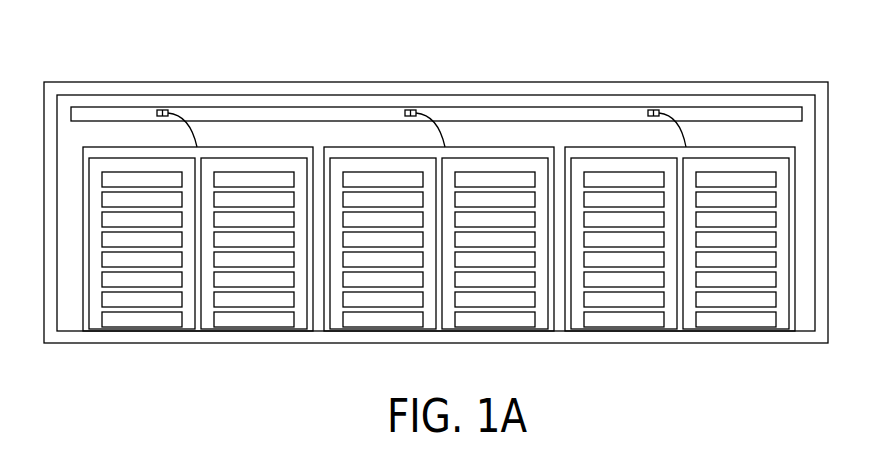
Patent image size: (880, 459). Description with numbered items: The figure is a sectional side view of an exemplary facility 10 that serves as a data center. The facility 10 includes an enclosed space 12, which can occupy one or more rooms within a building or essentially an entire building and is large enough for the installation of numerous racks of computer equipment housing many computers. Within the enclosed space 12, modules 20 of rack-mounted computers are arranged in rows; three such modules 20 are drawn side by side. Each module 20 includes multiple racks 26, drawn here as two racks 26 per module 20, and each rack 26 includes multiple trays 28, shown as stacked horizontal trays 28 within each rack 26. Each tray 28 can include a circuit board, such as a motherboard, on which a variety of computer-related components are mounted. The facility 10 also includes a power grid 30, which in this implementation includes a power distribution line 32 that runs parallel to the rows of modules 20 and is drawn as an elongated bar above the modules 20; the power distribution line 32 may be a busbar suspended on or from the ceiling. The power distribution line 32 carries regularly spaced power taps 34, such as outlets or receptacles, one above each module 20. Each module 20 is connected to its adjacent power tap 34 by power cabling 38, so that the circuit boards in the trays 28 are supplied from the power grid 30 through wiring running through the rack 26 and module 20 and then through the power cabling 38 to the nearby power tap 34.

The facility 10 is at (343, 61).
The enclosed space 12 is at (86, 144).
The module 20 is at (312, 272).
The rack 26 is at (88, 290).
The tray 28 is at (143, 287).
The power grid 30 is at (742, 107).
The power distribution line 32 is at (595, 108).
The power tap 34 is at (165, 110).
The power cabling 38 is at (192, 122).